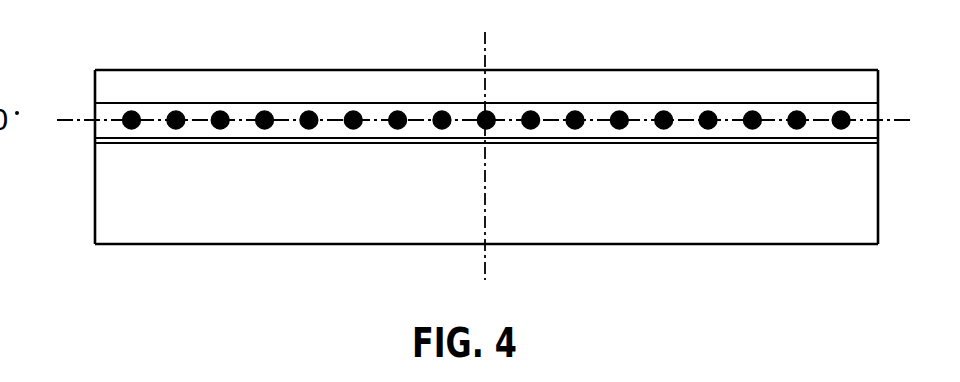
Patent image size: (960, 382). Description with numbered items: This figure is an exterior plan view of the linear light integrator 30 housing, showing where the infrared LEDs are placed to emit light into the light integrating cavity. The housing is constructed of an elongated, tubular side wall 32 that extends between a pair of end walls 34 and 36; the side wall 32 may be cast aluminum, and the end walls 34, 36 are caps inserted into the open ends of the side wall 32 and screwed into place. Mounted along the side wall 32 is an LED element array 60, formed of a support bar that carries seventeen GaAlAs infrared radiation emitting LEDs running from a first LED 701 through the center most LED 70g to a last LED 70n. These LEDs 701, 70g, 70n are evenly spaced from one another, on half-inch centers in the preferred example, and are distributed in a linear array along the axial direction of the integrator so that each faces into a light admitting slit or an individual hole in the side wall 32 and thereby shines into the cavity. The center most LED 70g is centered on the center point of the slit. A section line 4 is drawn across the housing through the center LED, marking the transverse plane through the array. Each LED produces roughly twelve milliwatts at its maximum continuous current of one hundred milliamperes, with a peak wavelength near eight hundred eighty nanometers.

The section line 4- 4 is at (485, 32).
The light integrator 30 is at (274, 261).
The tubular side wall 32 is at (686, 190).
The end wall 34 is at (95, 208).
The end wall 36 is at (878, 203).
The LED element array 60 is at (309, 168).
The first LED 701 is at (133, 112).
The center most LED 70g is at (489, 113).
The last LED 70n is at (835, 113).